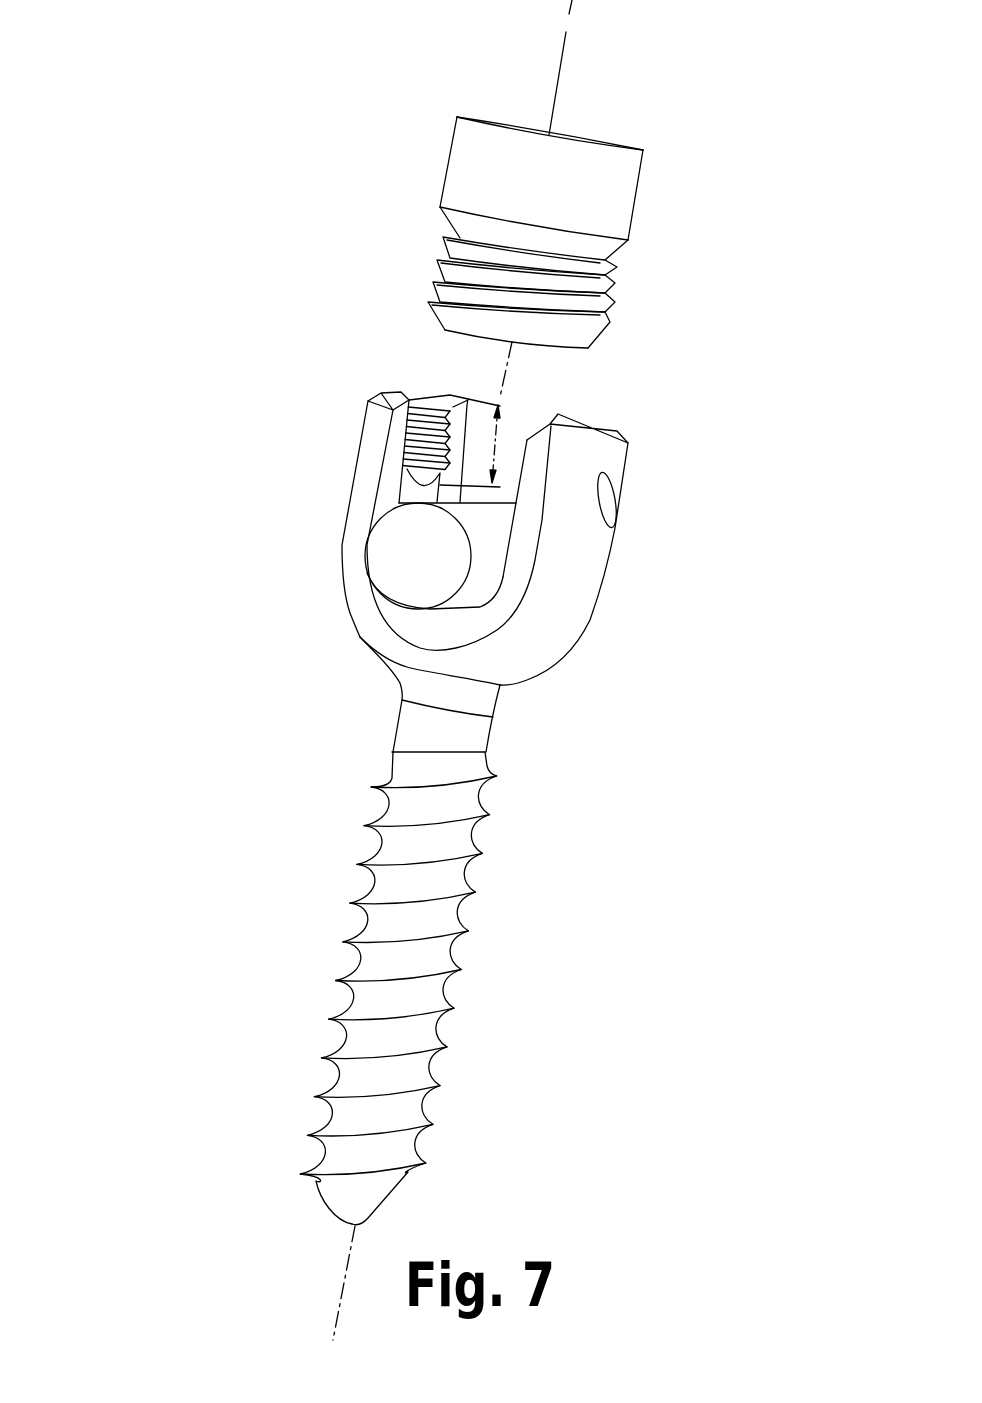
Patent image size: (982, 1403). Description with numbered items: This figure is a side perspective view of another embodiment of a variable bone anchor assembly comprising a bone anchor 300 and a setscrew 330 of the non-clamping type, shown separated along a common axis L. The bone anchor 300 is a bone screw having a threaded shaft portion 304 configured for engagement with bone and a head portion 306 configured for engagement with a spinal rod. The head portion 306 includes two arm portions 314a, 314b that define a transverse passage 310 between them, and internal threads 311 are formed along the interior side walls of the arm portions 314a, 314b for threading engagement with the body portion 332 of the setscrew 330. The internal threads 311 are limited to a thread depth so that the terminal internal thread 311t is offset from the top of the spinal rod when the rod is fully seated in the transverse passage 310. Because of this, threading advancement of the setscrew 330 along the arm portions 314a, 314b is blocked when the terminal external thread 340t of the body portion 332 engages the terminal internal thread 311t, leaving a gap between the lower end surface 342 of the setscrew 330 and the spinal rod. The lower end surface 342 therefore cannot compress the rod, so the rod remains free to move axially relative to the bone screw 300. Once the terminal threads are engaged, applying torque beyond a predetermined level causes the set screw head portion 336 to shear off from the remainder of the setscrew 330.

The bone anchor 300 is at (340, 718).
The threaded shaft portion 304 is at (452, 954).
The head portion 306 is at (592, 574).
The transverse passage 310 is at (454, 436).
The internal threads 311 is at (458, 398).
The terminal internal thread 311t is at (432, 478).
The arm portion 314a is at (360, 464).
The arm portion 314b is at (554, 536).
The setscrew 330 is at (399, 230).
The body portion 332 is at (640, 311).
The set screw head portion 336 is at (667, 198).
The terminal external thread 340t is at (423, 290).
The lower end surface 342 is at (553, 345).
The longitudinal axis L is at (583, 26).